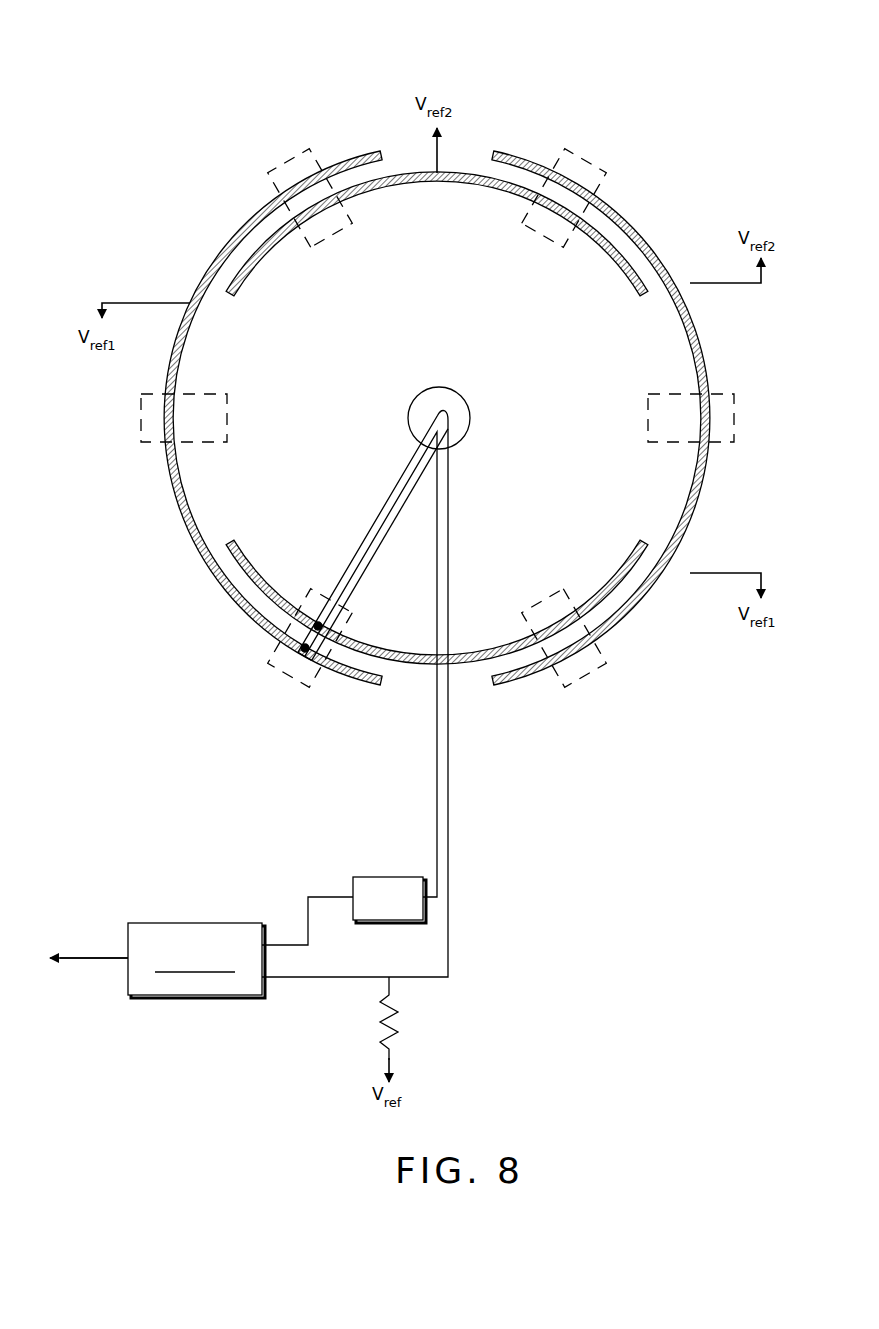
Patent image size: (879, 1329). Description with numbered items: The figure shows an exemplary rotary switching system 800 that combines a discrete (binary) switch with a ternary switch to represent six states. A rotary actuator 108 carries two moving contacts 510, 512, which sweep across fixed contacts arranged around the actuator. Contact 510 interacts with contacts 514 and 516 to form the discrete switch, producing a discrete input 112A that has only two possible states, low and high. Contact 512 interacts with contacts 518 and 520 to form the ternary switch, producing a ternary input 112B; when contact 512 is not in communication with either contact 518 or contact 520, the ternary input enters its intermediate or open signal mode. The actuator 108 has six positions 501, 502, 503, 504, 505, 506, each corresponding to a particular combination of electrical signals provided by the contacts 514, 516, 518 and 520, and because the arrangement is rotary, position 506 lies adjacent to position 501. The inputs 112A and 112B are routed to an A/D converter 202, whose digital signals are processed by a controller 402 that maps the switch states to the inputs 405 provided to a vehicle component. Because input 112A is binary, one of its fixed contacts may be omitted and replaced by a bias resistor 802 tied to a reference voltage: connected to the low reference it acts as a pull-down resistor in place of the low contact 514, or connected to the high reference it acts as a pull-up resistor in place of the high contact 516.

The switching system 800 is at (682, 62).
The actuator 108 is at (414, 398).
The discrete input 112A is at (398, 482).
The ternary input 112B is at (362, 560).
The position 501 is at (298, 688).
The position 502 is at (138, 410).
The position 503 is at (272, 180).
The position 504 is at (598, 170).
The position 505 is at (742, 410).
The position 506 is at (580, 680).
The contact 510 is at (314, 618).
The contact 512 is at (290, 668).
The contact 514 is at (172, 535).
The contact 516 is at (666, 298).
The contact 518 is at (606, 578).
The contact 520 is at (374, 193).
The A/D converter 202 is at (390, 877).
The controller 402 is at (207, 922).
The inputs 405 is at (95, 956).
The bias resistor 802 is at (384, 1020).